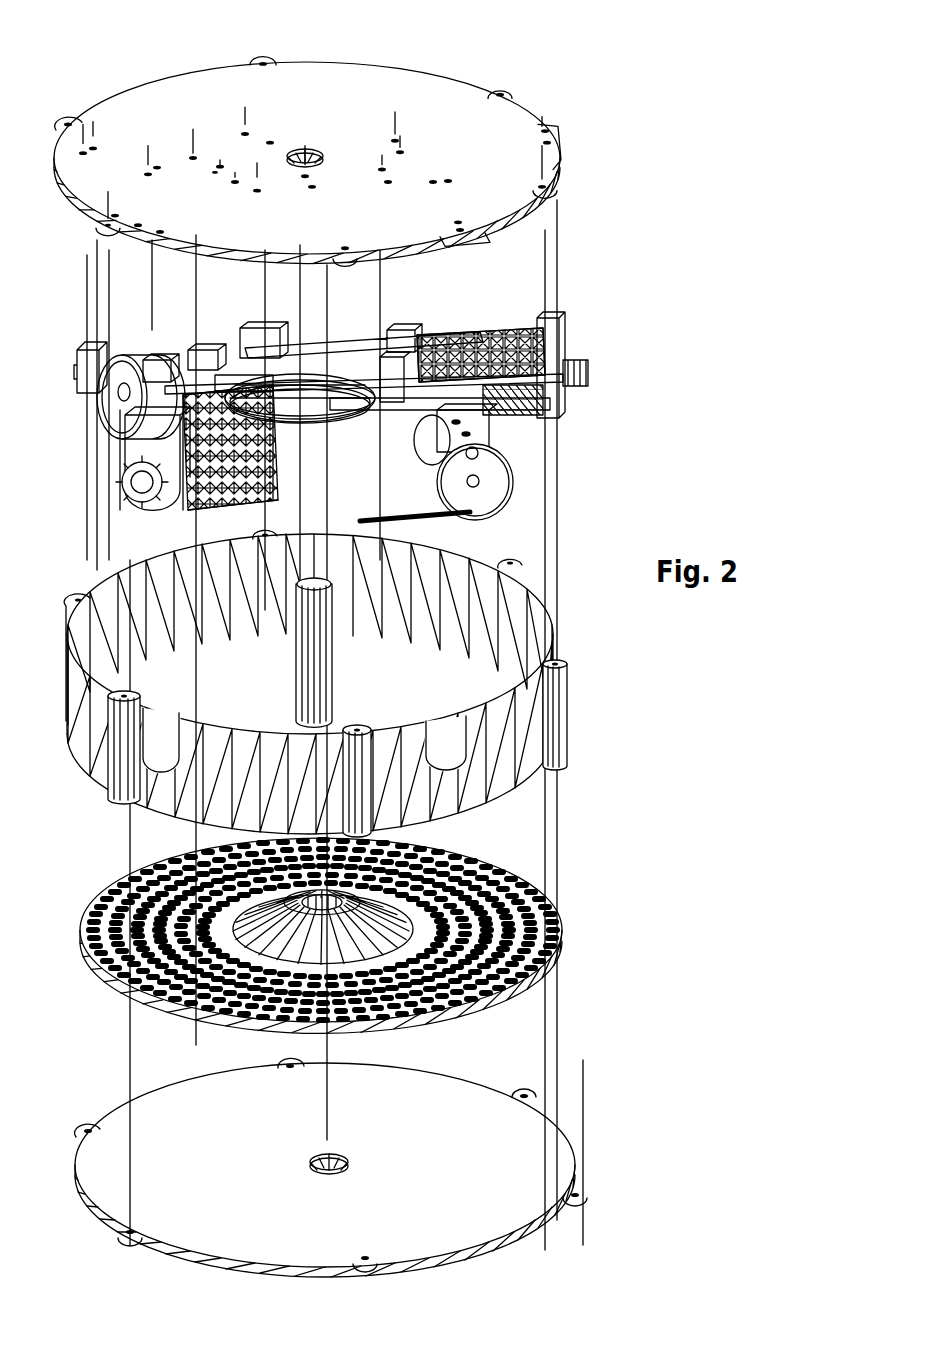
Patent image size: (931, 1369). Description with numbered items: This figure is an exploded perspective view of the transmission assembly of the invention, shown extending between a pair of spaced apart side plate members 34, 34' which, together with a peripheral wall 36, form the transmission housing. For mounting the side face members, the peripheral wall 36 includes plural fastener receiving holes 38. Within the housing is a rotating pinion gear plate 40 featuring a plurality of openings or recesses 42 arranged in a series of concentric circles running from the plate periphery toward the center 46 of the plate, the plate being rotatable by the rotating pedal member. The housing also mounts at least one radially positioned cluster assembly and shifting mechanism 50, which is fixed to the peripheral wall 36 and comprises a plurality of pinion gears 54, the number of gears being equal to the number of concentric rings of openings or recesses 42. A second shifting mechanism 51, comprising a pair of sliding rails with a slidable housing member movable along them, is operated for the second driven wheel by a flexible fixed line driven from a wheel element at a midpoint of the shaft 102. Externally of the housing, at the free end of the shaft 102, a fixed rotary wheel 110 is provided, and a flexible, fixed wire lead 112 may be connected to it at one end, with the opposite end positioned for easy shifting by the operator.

The side plate member 34 is at (327, 162).
The center of the plate 46 is at (308, 155).
The cluster assembly and shifting mechanism 50 is at (449, 331).
The shifting mechanism 51 is at (366, 372).
The pinion gears 54 is at (513, 337).
The shaft 102 is at (474, 480).
The fixed rotary wheel 110 is at (509, 505).
The flexible, fixed wire lead 112 is at (383, 513).
The peripheral wall 36 is at (568, 698).
The fastener receiving holes 38 is at (512, 563).
The pinion gear plate 40 is at (563, 938).
The openings or recesses 42 is at (497, 880).
The side plate member 34' is at (362, 1167).